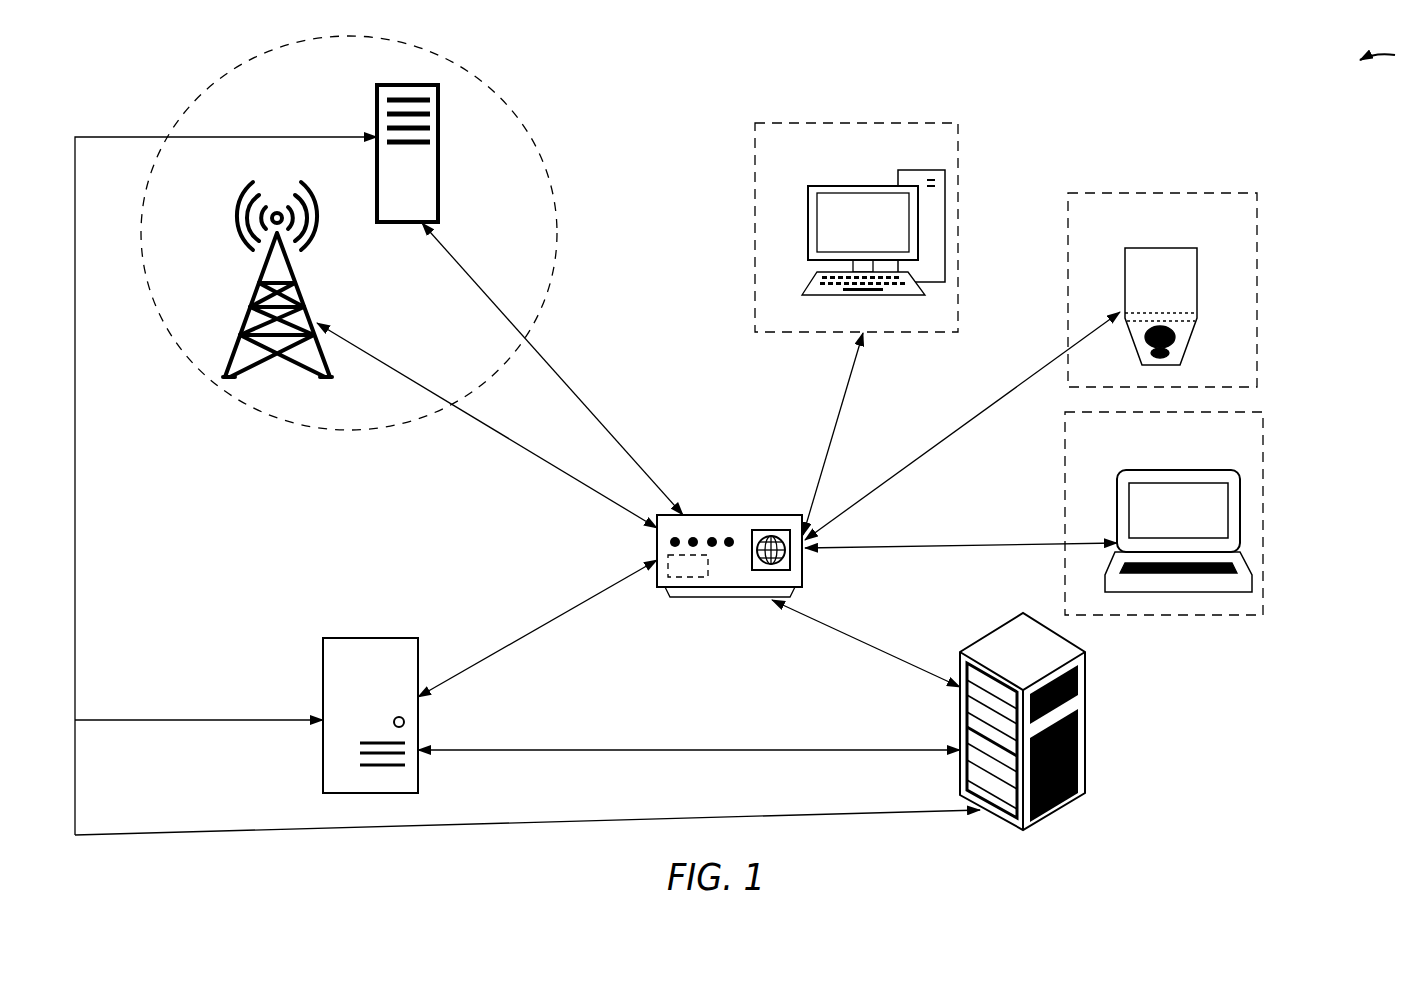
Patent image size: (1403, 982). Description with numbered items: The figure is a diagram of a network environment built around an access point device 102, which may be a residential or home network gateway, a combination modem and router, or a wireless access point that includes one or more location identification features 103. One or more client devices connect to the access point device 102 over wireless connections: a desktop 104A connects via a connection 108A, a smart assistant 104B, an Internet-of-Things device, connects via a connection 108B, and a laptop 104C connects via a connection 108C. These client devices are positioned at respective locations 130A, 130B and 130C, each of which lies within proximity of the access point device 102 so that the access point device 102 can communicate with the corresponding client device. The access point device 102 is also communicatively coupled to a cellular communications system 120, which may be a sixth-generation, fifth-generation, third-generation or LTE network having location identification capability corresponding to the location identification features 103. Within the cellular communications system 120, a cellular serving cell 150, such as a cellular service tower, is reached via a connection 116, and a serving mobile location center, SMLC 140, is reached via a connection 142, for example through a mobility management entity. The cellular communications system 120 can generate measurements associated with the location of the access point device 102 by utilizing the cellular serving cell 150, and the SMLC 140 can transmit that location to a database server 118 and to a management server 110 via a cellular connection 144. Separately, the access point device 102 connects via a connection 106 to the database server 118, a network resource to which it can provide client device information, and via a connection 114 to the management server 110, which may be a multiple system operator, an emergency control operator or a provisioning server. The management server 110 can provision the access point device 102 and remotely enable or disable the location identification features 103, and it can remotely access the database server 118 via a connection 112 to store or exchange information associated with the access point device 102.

The access point device 102 is at (736, 512).
The location identification features 103 is at (710, 570).
The desktop 104A is at (866, 185).
The smart assistant 104B is at (1177, 247).
The laptop 104C is at (1186, 470).
The connection 106 is at (546, 622).
The connection 108A is at (853, 396).
The connection 108B is at (1013, 391).
The connection 108C is at (1018, 542).
The management server 110 is at (1005, 626).
The connection 112 is at (760, 746).
The connection 114 is at (900, 657).
The connection 116 is at (500, 440).
The database server 118 is at (365, 636).
The cellular communications system 120 is at (297, 425).
The location 130A is at (752, 204).
The location 130B is at (1090, 192).
The location 130C is at (1264, 441).
The serving mobile location center 140 is at (376, 117).
The connection 142 is at (468, 276).
The cellular connection 144 is at (96, 135).
The cellular serving cell 150 is at (248, 302).